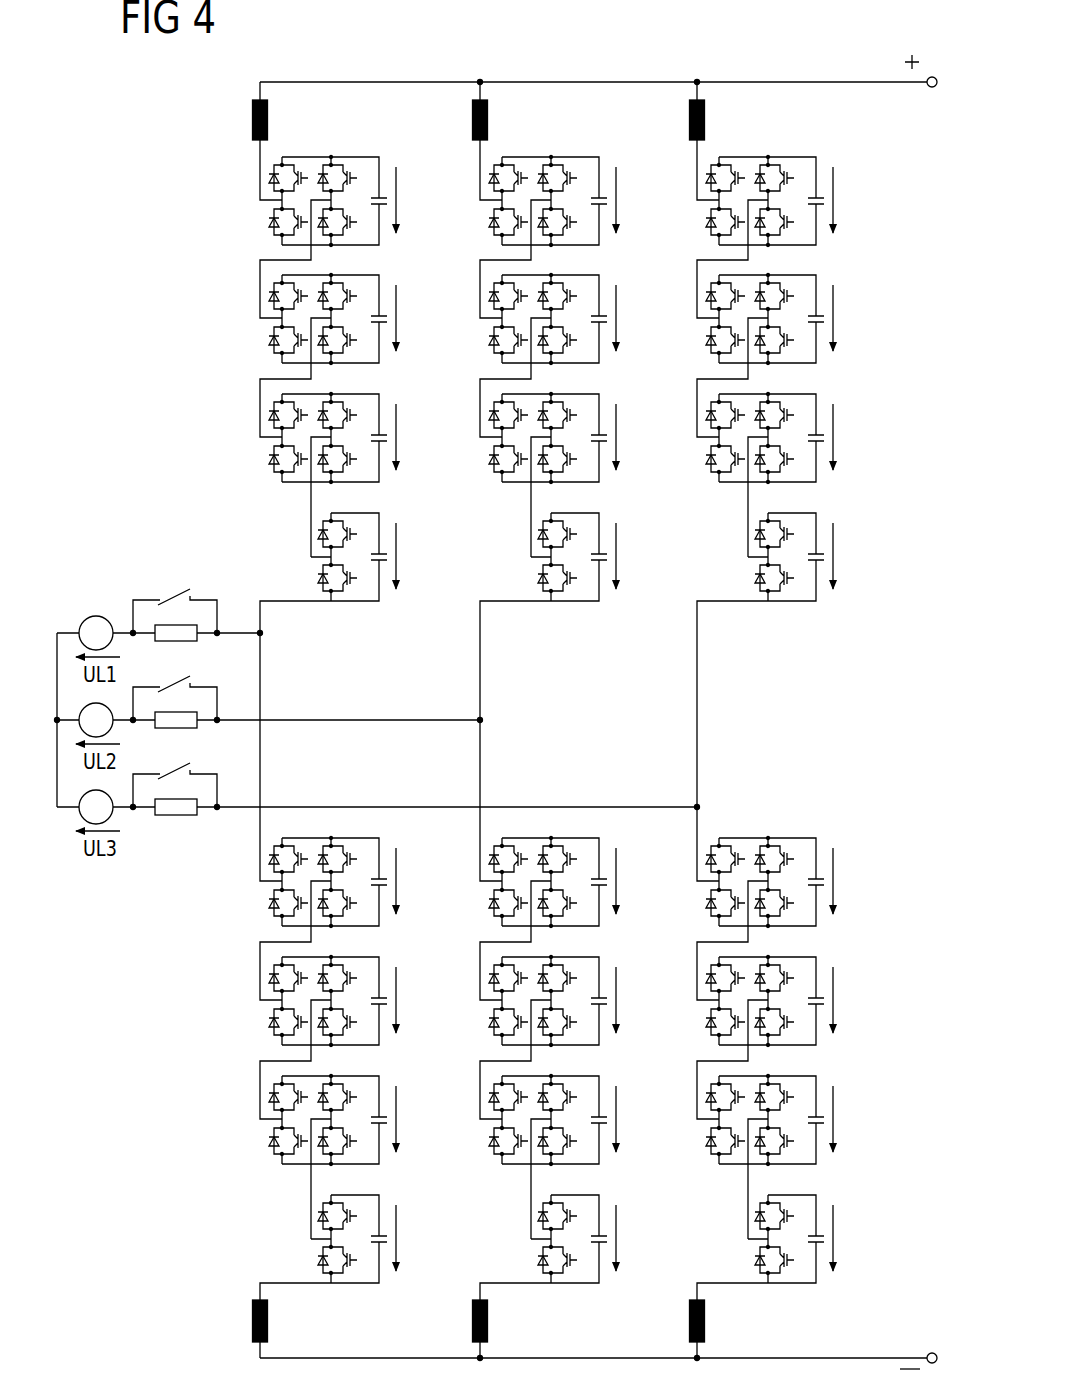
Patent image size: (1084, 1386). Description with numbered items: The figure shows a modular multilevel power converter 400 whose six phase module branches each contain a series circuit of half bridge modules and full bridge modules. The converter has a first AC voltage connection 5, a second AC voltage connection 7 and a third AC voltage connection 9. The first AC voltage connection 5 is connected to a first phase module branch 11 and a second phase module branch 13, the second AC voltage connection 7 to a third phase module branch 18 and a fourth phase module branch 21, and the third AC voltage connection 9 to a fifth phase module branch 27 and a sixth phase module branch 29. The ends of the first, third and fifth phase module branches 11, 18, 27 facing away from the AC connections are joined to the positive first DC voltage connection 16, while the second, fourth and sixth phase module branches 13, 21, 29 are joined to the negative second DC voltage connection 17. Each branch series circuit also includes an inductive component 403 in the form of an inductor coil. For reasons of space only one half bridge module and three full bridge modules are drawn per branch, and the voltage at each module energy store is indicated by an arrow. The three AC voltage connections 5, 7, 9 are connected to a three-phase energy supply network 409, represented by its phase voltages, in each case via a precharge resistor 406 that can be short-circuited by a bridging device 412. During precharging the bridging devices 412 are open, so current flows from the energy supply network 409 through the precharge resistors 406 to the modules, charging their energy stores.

The modular multilevel power converter 400 is at (830, 53).
The inductive component 403 is at (252, 118).
The first DC voltage connection 16 is at (862, 84).
The second DC voltage connection 17 is at (860, 1356).
The first phase module branch 11 is at (302, 580).
The third phase module branch 18 is at (521, 580).
The fifth phase module branch 27 is at (739, 580).
The second phase module branch 13 is at (304, 1262).
The fourth phase module branch 21 is at (522, 1262).
The sixth phase module branch 29 is at (739, 1262).
The first AC voltage connection 5 is at (240, 632).
The second AC voltage connection 7 is at (410, 719).
The third AC voltage connection 9 is at (630, 806).
The precharge resistor 406 is at (183, 642).
The bridging device 412 is at (185, 597).
The energy supply network 409 is at (101, 878).